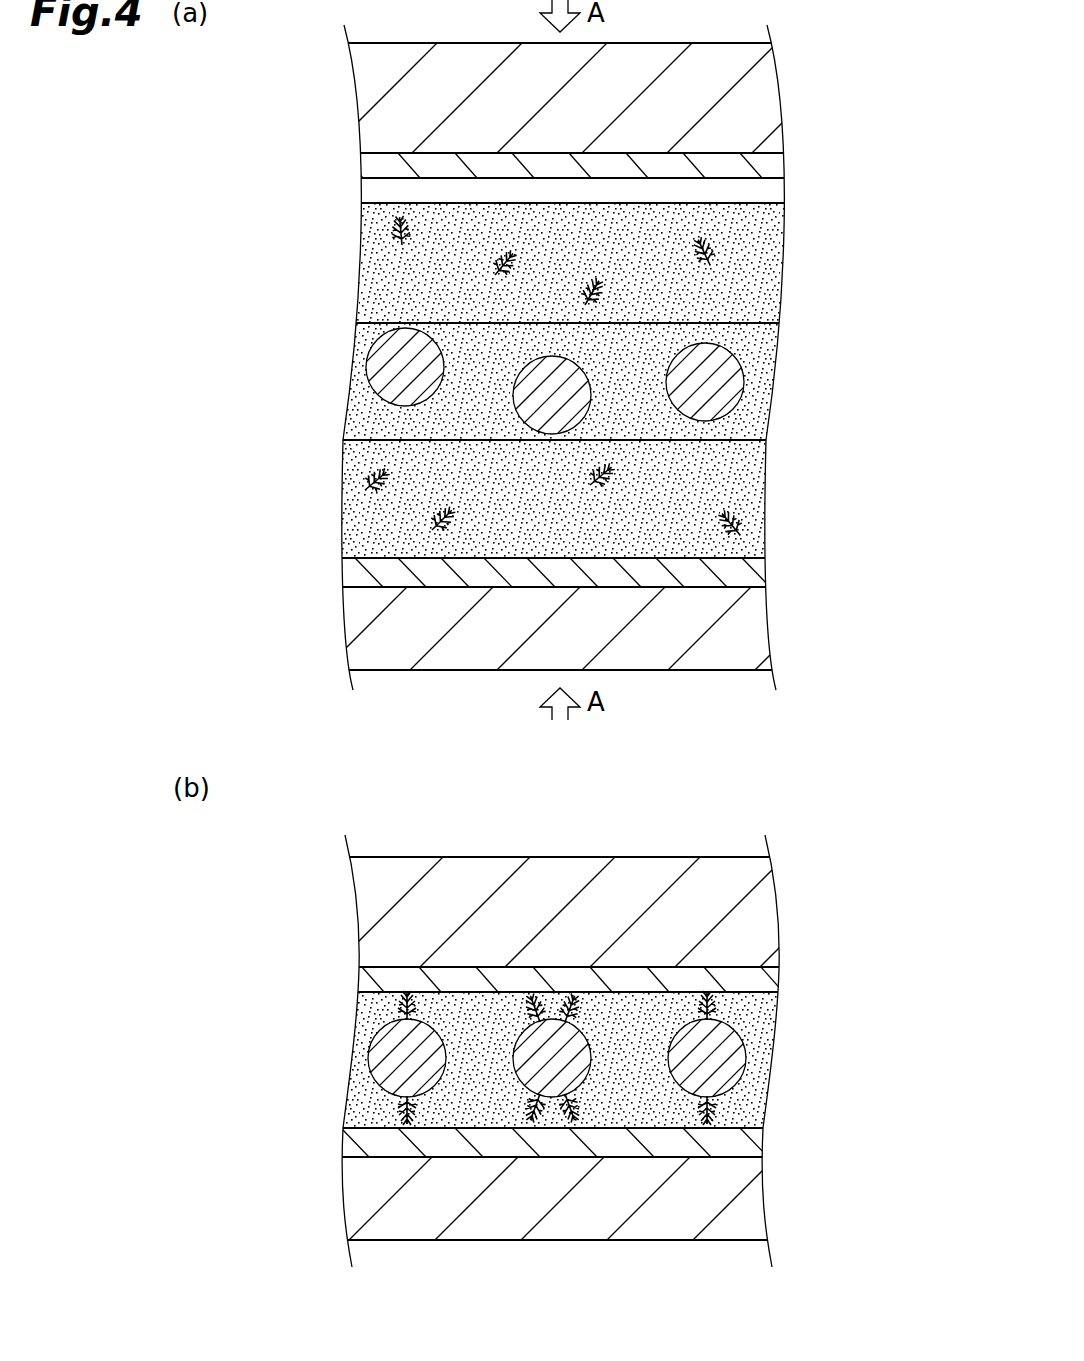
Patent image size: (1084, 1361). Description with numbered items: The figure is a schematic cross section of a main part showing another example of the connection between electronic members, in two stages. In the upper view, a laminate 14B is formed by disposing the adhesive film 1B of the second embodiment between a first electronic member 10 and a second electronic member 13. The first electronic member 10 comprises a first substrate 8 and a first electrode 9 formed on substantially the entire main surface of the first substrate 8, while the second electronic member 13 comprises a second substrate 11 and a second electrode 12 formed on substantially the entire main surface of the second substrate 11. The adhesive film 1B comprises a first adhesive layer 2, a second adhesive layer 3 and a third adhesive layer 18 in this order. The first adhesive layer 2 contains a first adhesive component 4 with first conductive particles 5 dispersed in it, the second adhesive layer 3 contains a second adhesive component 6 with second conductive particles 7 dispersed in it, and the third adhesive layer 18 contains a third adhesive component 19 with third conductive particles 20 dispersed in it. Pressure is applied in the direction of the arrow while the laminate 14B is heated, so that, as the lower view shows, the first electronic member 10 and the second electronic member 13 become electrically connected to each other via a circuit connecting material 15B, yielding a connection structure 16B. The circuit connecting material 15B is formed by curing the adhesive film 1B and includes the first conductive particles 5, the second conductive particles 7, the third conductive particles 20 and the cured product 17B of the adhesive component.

The adhesive film 1B is at (877, 245).
The first adhesive layer 2 is at (849, 225).
The second adhesive layer 3 is at (849, 323).
The first adhesive component 4 is at (755, 277).
The first conductive particle 5 is at (398, 232).
The second adhesive component 6 is at (755, 345).
The second conductive particle 7 is at (392, 366).
The first substrate 8 is at (763, 98).
The first electrode 9 is at (763, 165).
The first electronic member 10 is at (849, 85).
The second substrate 11 is at (745, 628).
The second electrode 12 is at (745, 575).
The second electronic member 13 is at (862, 560).
The laminate 14B is at (850, 52).
The circuit connecting material 15B is at (837, 953).
The connection structure 16B is at (838, 809).
The cured product of an adhesive component 17B is at (772, 1003).
The third adhesive layer 18 is at (832, 470).
The third adhesive component 19 is at (752, 478).
The third conductive particle 20 is at (435, 517).